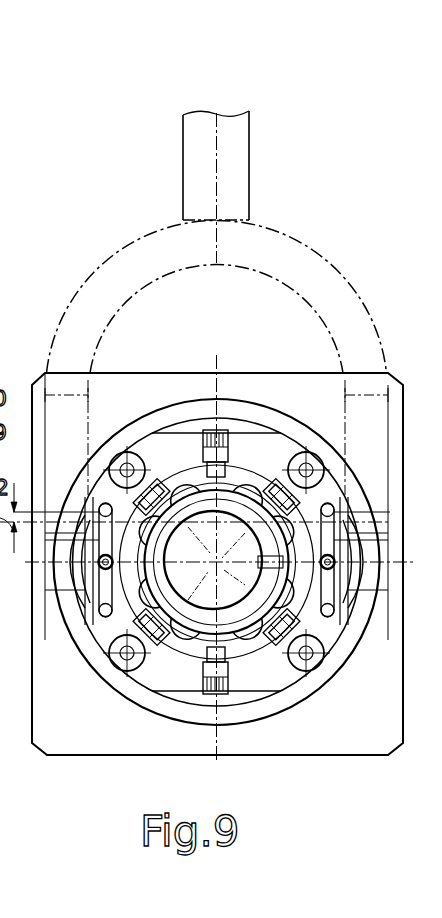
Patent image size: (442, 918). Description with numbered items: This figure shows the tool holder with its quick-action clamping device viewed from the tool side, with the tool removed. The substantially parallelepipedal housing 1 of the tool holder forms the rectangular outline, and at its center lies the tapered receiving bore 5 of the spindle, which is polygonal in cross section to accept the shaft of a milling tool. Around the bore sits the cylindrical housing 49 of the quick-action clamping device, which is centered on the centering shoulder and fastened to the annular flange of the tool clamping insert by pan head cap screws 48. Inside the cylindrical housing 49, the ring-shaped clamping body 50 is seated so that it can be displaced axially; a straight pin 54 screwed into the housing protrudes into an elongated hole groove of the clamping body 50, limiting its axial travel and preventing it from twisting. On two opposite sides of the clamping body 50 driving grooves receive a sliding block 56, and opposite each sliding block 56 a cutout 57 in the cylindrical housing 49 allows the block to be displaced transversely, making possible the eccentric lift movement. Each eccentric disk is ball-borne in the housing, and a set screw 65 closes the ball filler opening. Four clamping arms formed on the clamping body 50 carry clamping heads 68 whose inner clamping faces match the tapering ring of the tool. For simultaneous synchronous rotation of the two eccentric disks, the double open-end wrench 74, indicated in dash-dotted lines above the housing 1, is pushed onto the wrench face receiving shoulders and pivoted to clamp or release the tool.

The housing 1 is at (362, 728).
The receiving bore 5 is at (198, 561).
The pan head cap screws 48 is at (194, 372).
The cylindrical housing 49 is at (261, 667).
The clamping body 50 is at (199, 641).
The straight pin 54 is at (219, 432).
The sliding block 56 is at (92, 658).
The cutout 57 is at (118, 604).
The set screw 65 is at (333, 558).
The clamping head 68 is at (151, 485).
The double open-end wrench 74 is at (305, 240).